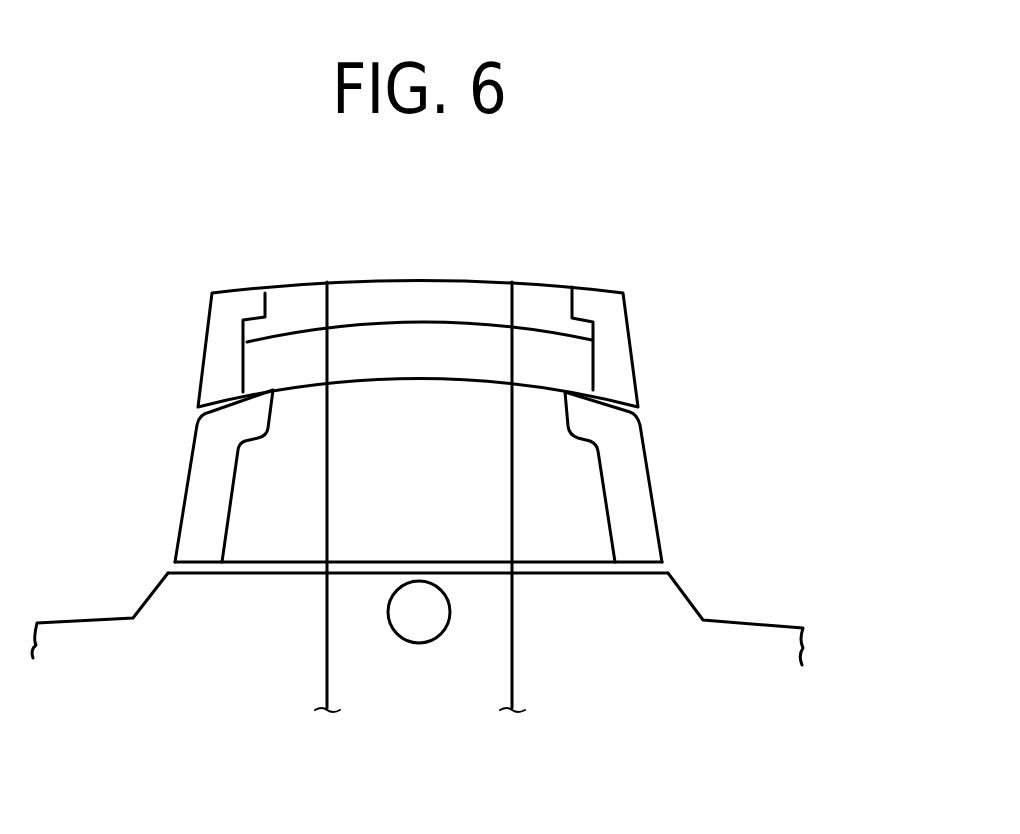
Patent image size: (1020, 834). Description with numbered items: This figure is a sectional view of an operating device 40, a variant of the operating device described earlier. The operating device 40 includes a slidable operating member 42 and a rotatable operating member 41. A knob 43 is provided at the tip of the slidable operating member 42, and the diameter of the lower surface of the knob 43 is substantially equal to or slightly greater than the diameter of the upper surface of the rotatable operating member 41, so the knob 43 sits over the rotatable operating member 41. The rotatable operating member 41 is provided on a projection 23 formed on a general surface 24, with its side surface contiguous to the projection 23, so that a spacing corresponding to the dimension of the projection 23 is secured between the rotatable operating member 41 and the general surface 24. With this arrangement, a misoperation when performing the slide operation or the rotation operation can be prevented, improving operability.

The operating device 40 is at (655, 293).
The rotatable operating member 41 is at (653, 480).
The slidable operating member 42 is at (637, 372).
The knob 43 is at (203, 358).
The projection 23 is at (685, 590).
The general surface 24 is at (767, 620).